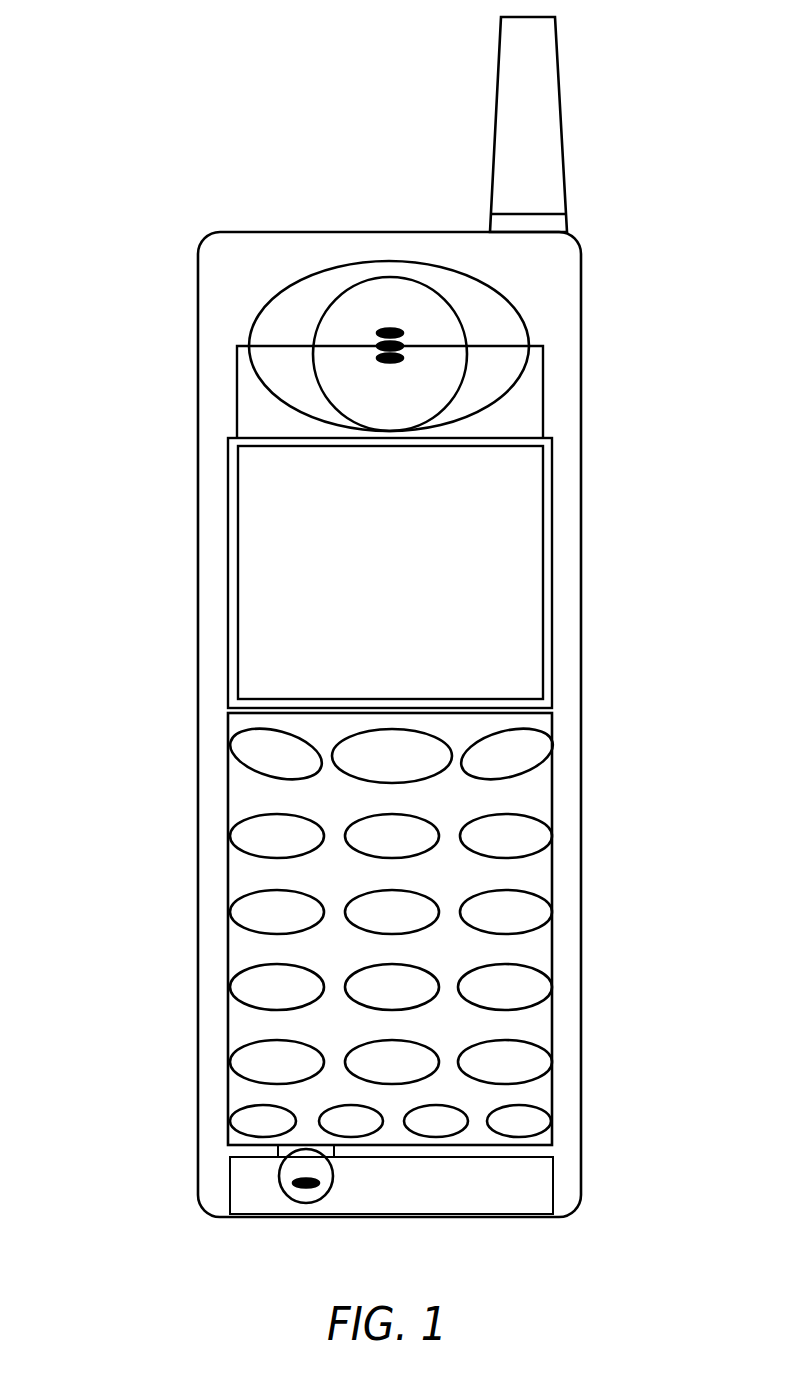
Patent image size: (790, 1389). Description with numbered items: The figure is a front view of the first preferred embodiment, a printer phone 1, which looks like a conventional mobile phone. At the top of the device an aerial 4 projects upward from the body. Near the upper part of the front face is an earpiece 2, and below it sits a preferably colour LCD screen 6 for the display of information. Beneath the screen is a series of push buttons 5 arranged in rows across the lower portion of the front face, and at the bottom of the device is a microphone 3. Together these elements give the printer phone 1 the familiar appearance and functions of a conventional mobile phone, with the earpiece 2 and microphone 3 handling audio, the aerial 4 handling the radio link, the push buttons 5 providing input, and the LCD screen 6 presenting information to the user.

The printer phone 1 is at (130, 697).
The earpiece 2 is at (498, 320).
The microphone 3 is at (305, 1193).
The aerial 4 is at (548, 109).
The series of push buttons 5 is at (533, 753).
The colour LCD screen 6 is at (442, 582).